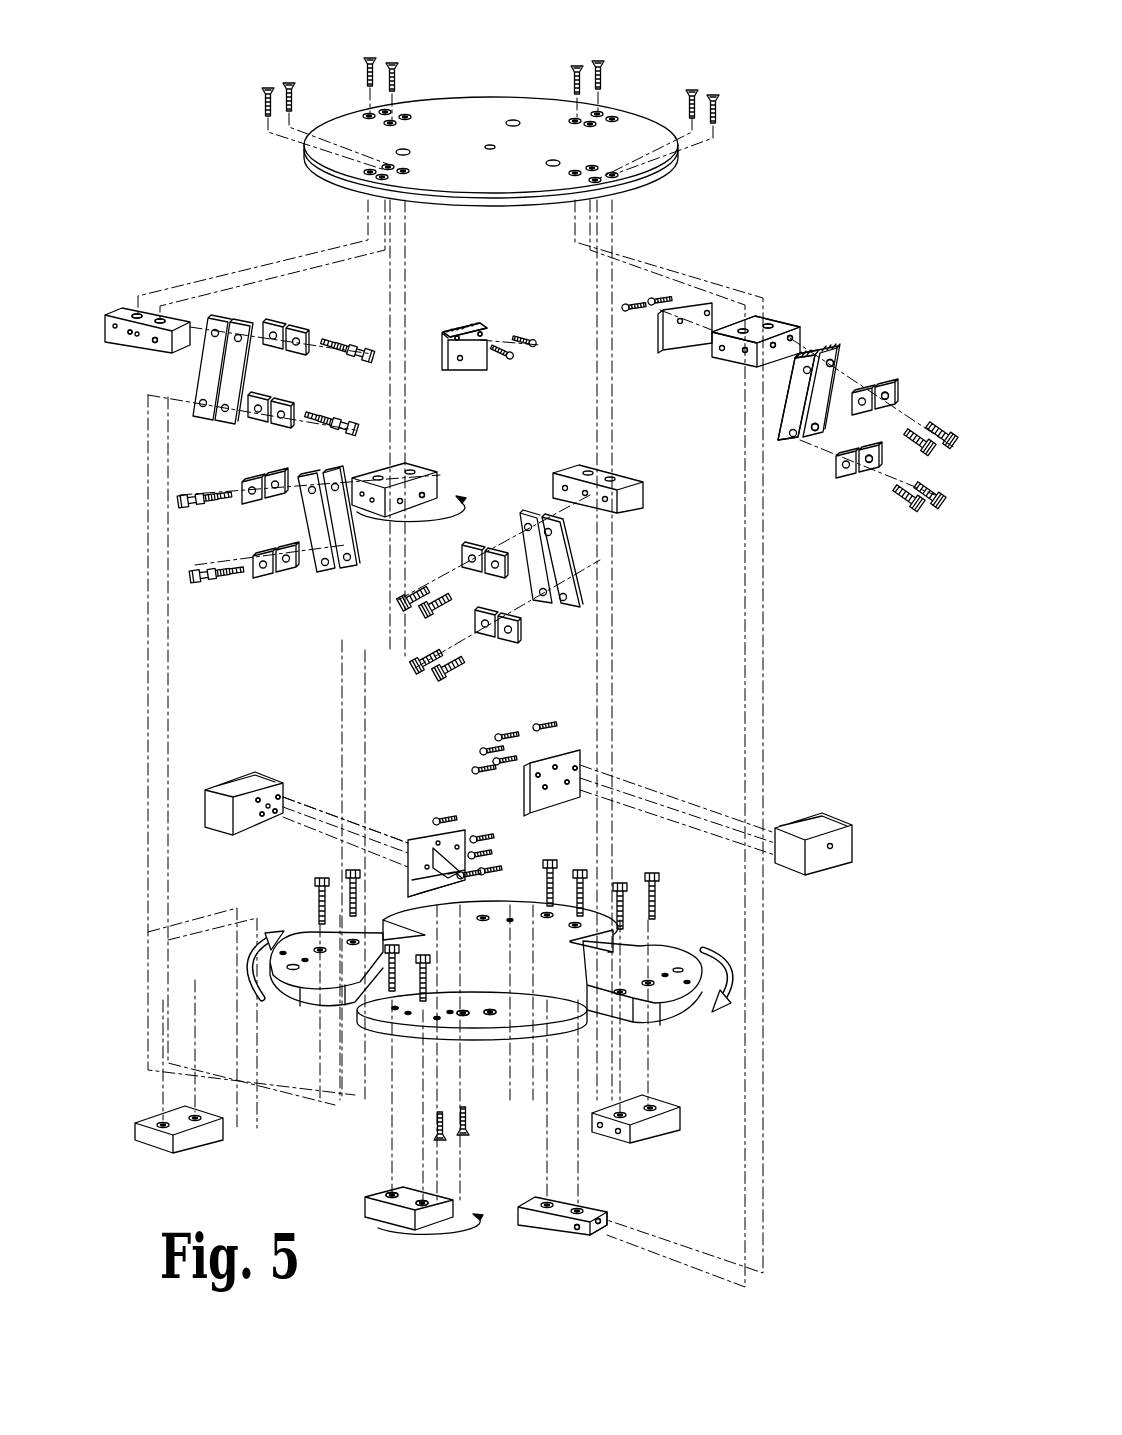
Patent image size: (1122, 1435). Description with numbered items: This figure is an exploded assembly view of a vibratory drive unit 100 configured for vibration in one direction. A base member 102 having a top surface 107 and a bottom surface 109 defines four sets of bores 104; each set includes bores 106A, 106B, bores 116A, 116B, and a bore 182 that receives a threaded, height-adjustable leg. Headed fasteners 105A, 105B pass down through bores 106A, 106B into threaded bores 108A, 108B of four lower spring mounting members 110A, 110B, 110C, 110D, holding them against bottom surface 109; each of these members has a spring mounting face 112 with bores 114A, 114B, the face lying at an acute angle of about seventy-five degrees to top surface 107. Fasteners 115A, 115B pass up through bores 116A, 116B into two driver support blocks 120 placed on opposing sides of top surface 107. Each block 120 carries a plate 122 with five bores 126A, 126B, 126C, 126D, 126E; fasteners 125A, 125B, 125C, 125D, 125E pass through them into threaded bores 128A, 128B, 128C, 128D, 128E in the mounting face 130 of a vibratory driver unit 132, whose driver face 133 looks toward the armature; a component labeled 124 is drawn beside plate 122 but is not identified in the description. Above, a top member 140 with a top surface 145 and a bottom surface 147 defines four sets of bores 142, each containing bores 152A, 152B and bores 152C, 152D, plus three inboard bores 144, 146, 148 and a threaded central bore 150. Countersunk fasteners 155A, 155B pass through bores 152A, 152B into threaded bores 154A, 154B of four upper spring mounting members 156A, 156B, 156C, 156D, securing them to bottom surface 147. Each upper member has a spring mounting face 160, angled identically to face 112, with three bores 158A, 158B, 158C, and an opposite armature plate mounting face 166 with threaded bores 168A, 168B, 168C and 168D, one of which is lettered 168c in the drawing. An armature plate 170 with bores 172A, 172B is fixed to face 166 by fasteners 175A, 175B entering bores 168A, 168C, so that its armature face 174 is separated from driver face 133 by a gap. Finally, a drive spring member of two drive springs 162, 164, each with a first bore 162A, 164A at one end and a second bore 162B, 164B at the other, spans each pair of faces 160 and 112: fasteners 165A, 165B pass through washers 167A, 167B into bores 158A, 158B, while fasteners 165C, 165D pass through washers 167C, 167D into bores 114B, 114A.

The vibratory drive unit 100 is at (282, 32).
The base member 102 is at (520, 1030).
The set of bores 104 is at (533, 930).
The fastener 105A is at (387, 953).
The fastener 105B is at (433, 957).
The bore 106A is at (392, 1005).
The bore 106B is at (408, 1015).
The top surface 107 is at (568, 955).
The bore 108A is at (393, 1193).
The bore 108B is at (422, 1201).
The bottom surface 109 is at (681, 1017).
The lower spring mounting member 110A is at (387, 1215).
The lower spring mounting member 110B is at (160, 1142).
The lower spring mounting member 110C is at (540, 1228).
The lower spring mounting member 110D is at (650, 1140).
The spring mounting face 112 is at (603, 1213).
The bore 114A is at (578, 1231).
The bore 114B is at (602, 1222).
The fastener 115A is at (445, 1128).
The fastener 115B is at (465, 1110).
The bore 116A is at (437, 1017).
The bore 116B is at (462, 1011).
The driver support block 120 is at (428, 887).
The plate 122 is at (465, 830).
The bracket plate 124 is at (560, 812).
The fastener 125A is at (470, 770).
The fastener 125B is at (556, 728).
The fastener 125C is at (493, 739).
The fastener 125D is at (548, 726).
The fastener 125E is at (477, 751).
The bore 126A is at (548, 789).
The bore 126B is at (538, 777).
The bore 126C is at (578, 767).
The bore 126D is at (570, 781).
The bore 126E is at (558, 769).
The bore 128A is at (270, 810).
The bore 128B is at (280, 812).
The bore 128C is at (278, 795).
The bore 128D is at (256, 805).
The bore 128E is at (262, 818).
The mounting face 130 is at (254, 808).
The vibratory driver unit 132 is at (238, 775).
The driver face 133 is at (833, 848).
The top member 140 is at (487, 97).
The set of bores 142 is at (583, 113).
The bore 144 is at (513, 120).
The top surface 145 is at (492, 125).
The bore 146 is at (548, 164).
The bottom surface 147 is at (323, 179).
The bore 148 is at (396, 152).
The central bore 150 is at (486, 147).
The bore 152A is at (591, 166).
The bore 152B is at (614, 177).
The bore 152C is at (577, 171).
The bore 152D is at (595, 182).
The bore 154A is at (743, 329).
The bore 154B is at (768, 324).
The fastener 155A is at (692, 89).
The fastener 155B is at (716, 95).
The upper spring mounting member 156A is at (802, 326).
The upper spring mounting member 156B is at (232, 322).
The upper spring mounting member 156C is at (565, 471).
The upper spring mounting member 156D is at (434, 468).
The bore 158A is at (793, 337).
The bore 158B is at (773, 348).
The bore 158C is at (746, 353).
The spring mounting face 160 is at (760, 326).
The drive spring 162 is at (840, 352).
The first bore 162A is at (833, 362).
The second bore 162B is at (819, 427).
The drive spring 164 is at (780, 446).
The first bore 164A is at (797, 355).
The second bore 164B is at (800, 446).
The fastener 165A is at (952, 432).
The fastener 165B is at (918, 455).
The fastener 165C is at (938, 510).
The fastener 165D is at (915, 512).
The armature plate mounting face 166 is at (112, 345).
The washer 167A is at (895, 390).
The washer 167B is at (862, 388).
The washer 167C is at (860, 480).
The washer 167D is at (838, 480).
The bore 168A is at (115, 310).
The bore 168B is at (130, 335).
The bore 168C is at (424, 493).
The bore 168c is at (148, 300).
The bore 168D is at (155, 343).
The armature plate 170 is at (475, 329).
The bore 172A is at (462, 333).
The bore 172B is at (488, 332).
The armature face 174 is at (462, 363).
The fastener 175A is at (515, 358).
The fastener 175B is at (538, 343).
The bore 182 is at (492, 1014).